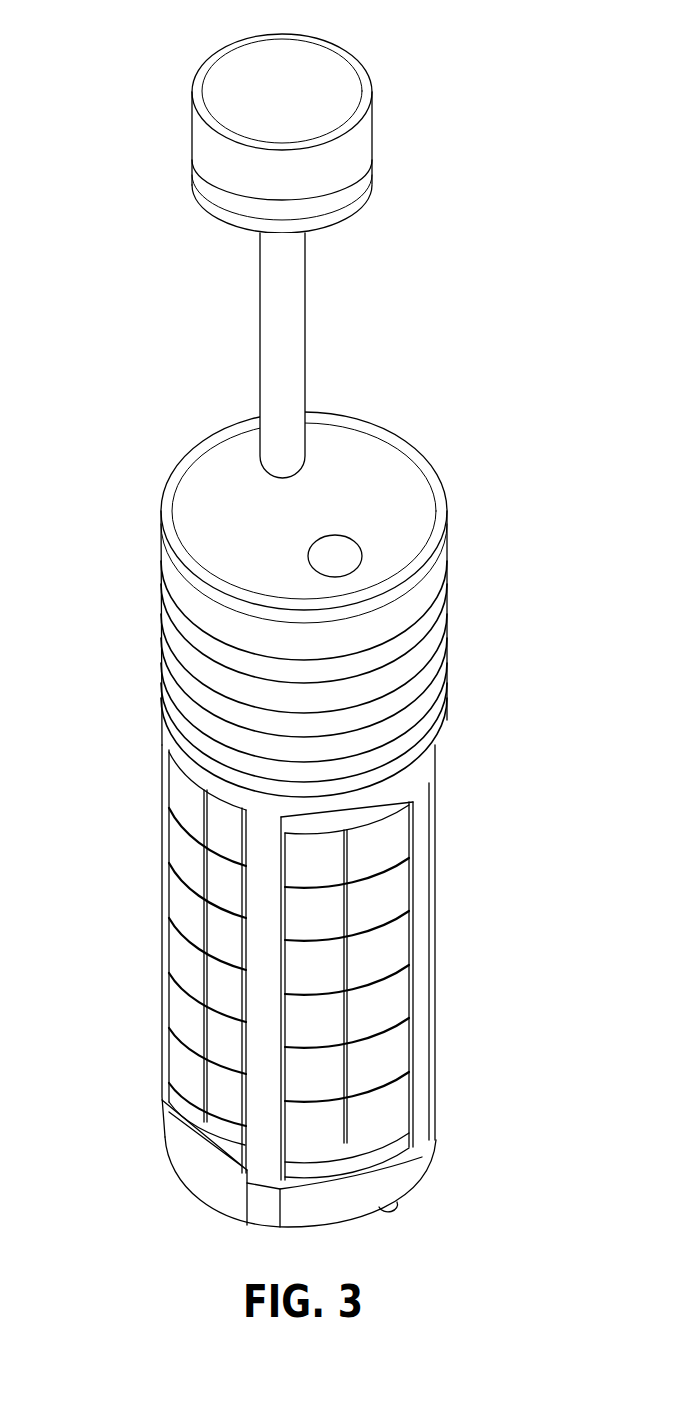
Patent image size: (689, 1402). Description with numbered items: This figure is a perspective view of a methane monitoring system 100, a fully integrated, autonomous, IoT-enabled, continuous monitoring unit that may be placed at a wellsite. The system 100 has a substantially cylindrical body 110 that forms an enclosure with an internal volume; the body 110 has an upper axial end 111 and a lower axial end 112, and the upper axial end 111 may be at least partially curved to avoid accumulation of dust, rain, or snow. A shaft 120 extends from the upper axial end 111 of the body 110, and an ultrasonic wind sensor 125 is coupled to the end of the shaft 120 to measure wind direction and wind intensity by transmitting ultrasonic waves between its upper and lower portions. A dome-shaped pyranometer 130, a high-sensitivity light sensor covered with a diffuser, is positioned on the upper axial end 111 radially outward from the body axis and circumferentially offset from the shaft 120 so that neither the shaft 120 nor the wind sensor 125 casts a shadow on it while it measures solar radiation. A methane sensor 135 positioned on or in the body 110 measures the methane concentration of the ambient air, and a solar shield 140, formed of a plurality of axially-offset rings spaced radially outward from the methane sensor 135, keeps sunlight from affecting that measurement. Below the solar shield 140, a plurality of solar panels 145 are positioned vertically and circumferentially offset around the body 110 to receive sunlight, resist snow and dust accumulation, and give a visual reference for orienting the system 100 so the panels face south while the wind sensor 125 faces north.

The methane monitoring system 100 is at (138, 43).
The body 110 is at (435, 900).
The upper axial end 111 is at (357, 453).
The lower axial end 112 is at (347, 1215).
The shaft 120 is at (307, 307).
The wind sensor 125 is at (373, 113).
The pyranometer 130 is at (337, 557).
The methane sensor 135 is at (153, 678).
The solar shield 140 is at (458, 547).
The solar panels 145 is at (373, 1107).